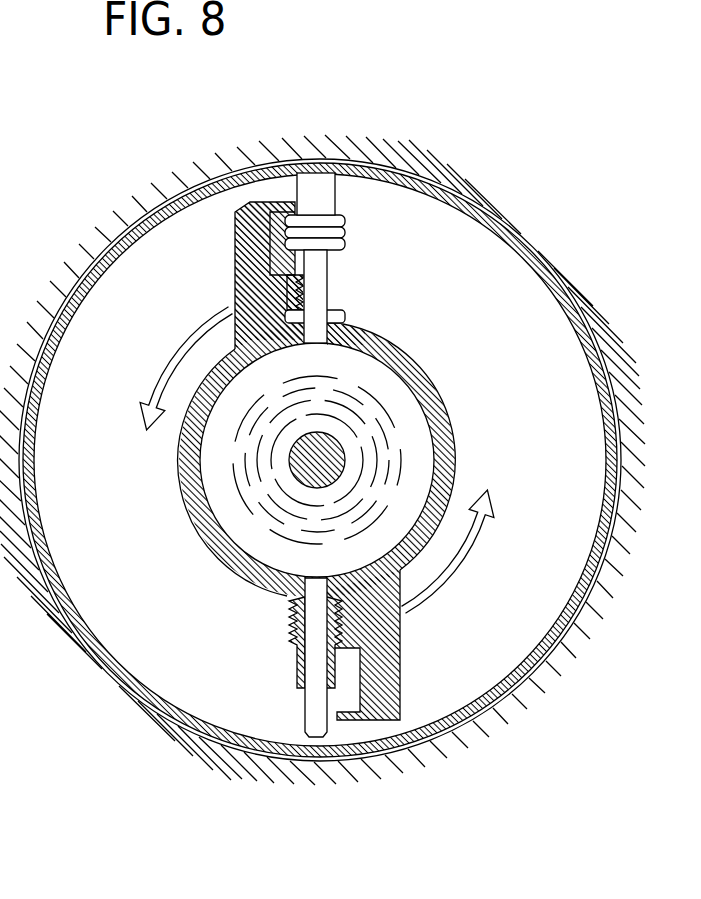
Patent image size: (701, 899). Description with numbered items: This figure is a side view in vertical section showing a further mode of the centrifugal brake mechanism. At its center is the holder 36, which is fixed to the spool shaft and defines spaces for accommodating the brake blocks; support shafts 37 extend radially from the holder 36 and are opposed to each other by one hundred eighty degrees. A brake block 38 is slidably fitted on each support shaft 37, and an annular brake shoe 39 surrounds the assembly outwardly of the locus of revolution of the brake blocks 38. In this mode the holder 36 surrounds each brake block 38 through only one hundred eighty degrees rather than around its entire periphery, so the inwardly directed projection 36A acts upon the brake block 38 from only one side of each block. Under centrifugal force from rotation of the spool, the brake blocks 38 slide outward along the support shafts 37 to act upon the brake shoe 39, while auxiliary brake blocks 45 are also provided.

The holder 36 is at (185, 493).
The inwardly directed projection 36A is at (297, 297).
The support shaft 37 is at (320, 283).
The brake block 38 is at (327, 195).
The annular brake shoe 39 is at (558, 313).
The auxiliary brake block 45 is at (340, 232).